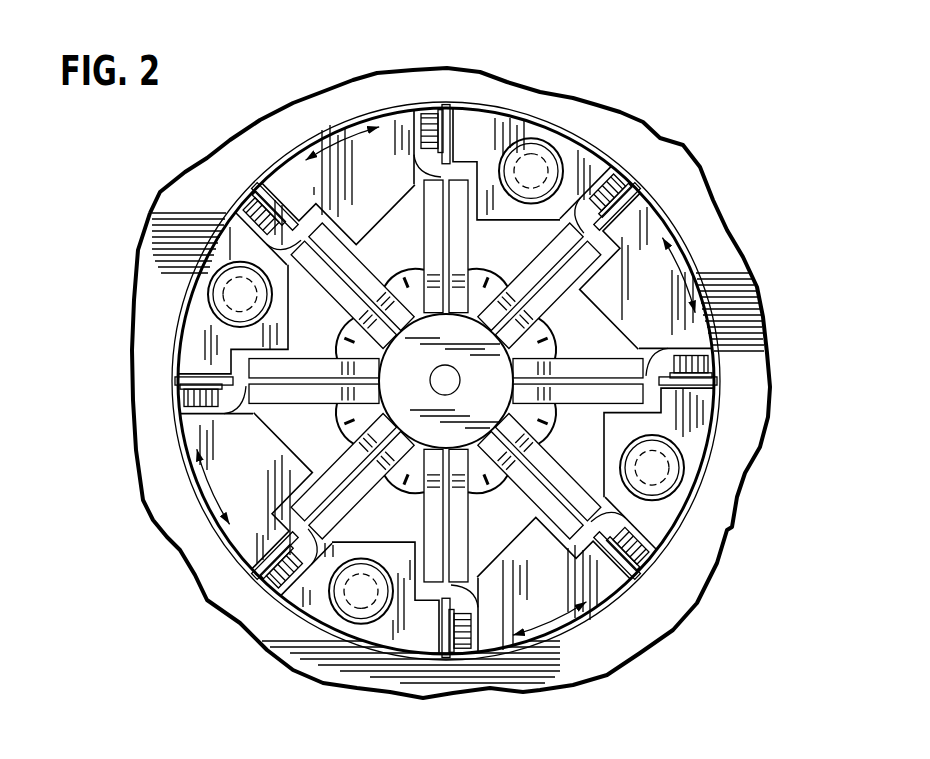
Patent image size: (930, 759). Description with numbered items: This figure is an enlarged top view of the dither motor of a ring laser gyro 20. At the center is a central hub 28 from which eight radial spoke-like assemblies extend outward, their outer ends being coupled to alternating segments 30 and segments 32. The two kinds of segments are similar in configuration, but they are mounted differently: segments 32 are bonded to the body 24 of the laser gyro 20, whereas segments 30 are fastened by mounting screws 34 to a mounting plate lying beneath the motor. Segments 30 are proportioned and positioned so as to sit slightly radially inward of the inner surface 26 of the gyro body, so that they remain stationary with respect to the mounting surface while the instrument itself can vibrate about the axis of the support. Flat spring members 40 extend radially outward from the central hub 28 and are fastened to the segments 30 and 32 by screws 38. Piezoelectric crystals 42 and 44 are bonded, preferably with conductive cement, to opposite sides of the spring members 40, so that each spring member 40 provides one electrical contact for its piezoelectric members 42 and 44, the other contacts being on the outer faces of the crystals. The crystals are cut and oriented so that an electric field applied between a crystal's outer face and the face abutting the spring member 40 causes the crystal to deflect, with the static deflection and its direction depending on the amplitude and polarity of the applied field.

The laser gyro 20 is at (185, 200).
The body 24 is at (597, 237).
The inner surface 26 is at (588, 142).
The central hub 28 is at (463, 380).
The segments 30 is at (484, 128).
The segments 32 is at (338, 130).
The mounting screws 34 is at (222, 295).
The screws 38 is at (248, 203).
The flat spring members 40 is at (302, 223).
The piezoelectric crystals 42 is at (427, 243).
The piezoelectric crystals 44 is at (612, 163).